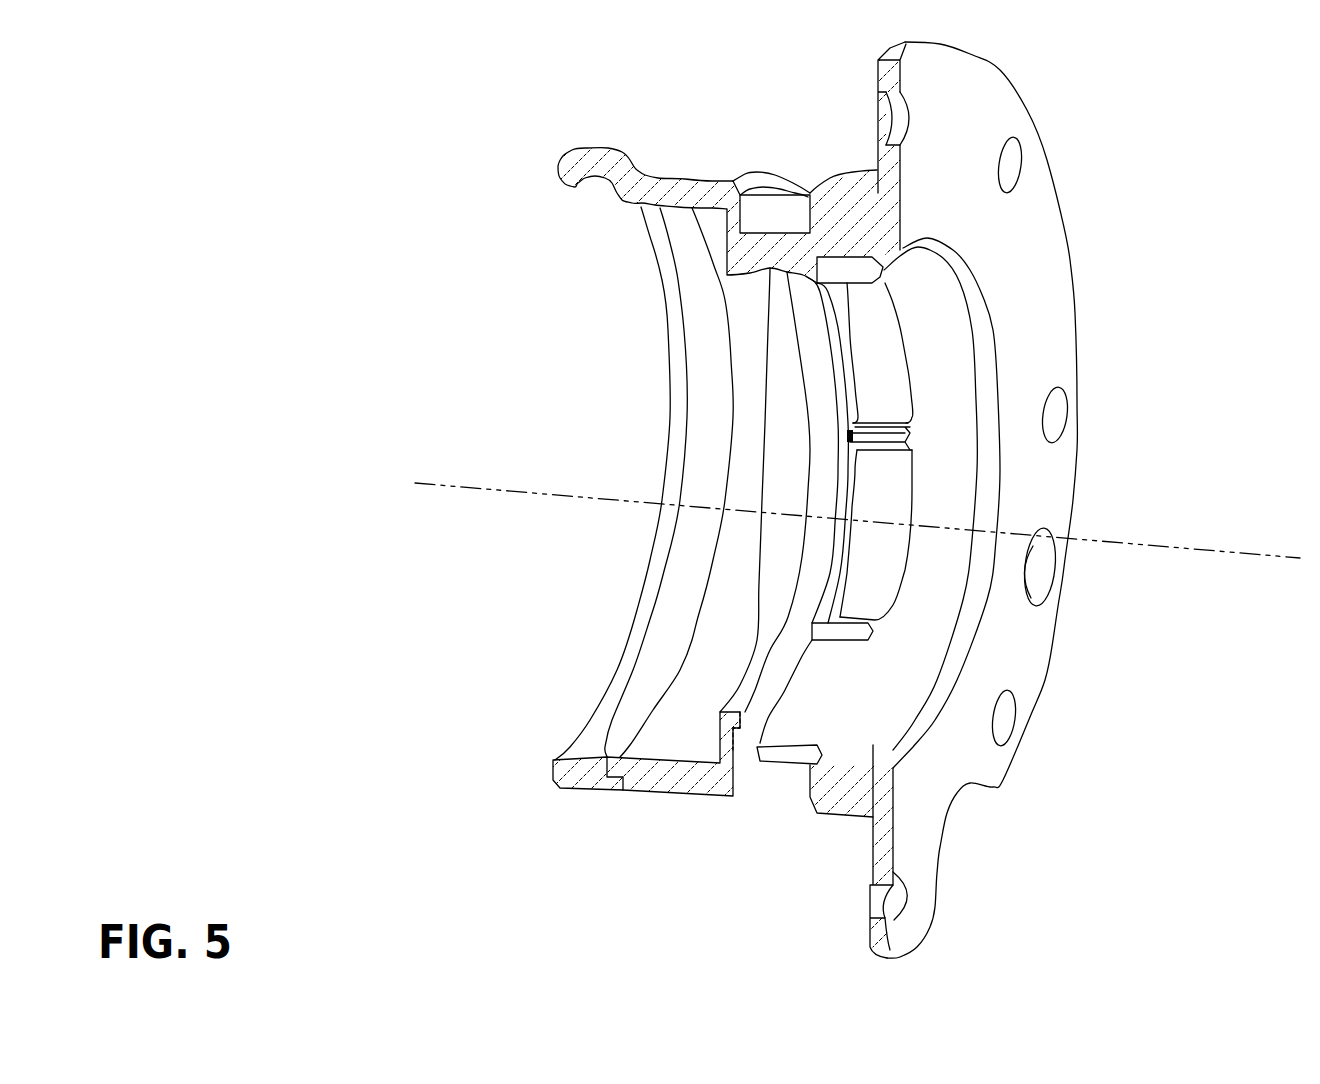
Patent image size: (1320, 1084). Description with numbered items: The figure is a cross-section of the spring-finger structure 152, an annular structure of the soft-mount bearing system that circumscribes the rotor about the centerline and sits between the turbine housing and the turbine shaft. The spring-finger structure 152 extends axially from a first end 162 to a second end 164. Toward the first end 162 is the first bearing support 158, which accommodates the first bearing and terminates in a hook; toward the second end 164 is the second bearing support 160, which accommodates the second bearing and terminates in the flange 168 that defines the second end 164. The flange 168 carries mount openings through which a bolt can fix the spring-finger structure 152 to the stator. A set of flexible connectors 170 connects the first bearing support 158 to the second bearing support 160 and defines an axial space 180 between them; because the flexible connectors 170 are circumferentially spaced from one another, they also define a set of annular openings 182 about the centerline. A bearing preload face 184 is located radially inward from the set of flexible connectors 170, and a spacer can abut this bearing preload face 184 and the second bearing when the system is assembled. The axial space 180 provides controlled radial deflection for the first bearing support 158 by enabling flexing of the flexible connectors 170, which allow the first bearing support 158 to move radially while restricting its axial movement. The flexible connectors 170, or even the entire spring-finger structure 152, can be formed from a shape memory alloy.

The spring-finger structure 152 is at (358, 121).
The first bearing support 158 is at (776, 457).
The second bearing support 160 is at (930, 468).
The first end 162 is at (575, 192).
The second end 164 is at (990, 130).
The flange 168 is at (1030, 270).
The set of flexible connectors 170 is at (785, 758).
The axial space 180 is at (942, 590).
The set of annular openings 182 is at (902, 402).
The bearing preload face 184 is at (766, 704).